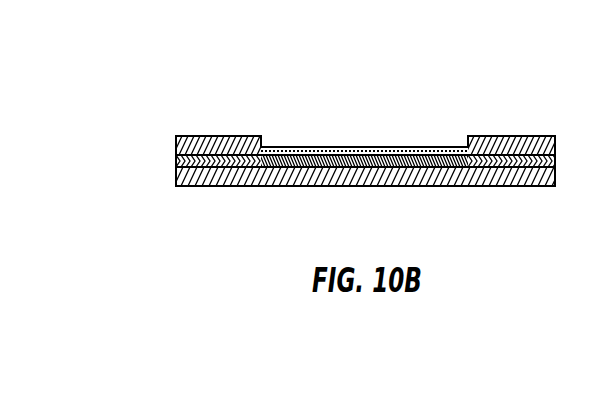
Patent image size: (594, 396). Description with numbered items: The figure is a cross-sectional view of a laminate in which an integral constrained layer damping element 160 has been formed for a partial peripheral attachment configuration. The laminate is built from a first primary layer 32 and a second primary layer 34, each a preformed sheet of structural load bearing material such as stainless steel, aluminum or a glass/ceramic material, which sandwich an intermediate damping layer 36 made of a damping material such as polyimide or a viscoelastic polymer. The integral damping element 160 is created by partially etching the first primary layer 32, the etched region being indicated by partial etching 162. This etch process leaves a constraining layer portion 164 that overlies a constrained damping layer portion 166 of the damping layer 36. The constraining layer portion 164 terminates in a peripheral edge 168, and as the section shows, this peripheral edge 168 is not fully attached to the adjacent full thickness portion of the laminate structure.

The first primary layer 32 is at (176, 143).
The second primary layer 34 is at (176, 178).
The intermediate damping layer 36 is at (176, 162).
The integral constrained layer damping element 160 is at (385, 176).
The partial etching 162 is at (254, 146).
The constraining layer portion 164 is at (442, 136).
The constrained damping layer portion 166 is at (458, 165).
The peripheral edge 168 is at (257, 148).